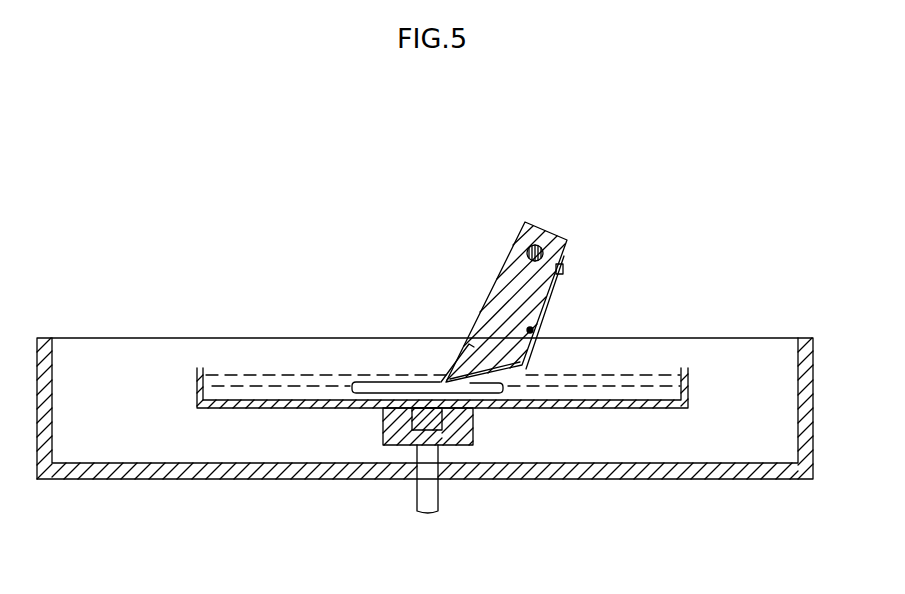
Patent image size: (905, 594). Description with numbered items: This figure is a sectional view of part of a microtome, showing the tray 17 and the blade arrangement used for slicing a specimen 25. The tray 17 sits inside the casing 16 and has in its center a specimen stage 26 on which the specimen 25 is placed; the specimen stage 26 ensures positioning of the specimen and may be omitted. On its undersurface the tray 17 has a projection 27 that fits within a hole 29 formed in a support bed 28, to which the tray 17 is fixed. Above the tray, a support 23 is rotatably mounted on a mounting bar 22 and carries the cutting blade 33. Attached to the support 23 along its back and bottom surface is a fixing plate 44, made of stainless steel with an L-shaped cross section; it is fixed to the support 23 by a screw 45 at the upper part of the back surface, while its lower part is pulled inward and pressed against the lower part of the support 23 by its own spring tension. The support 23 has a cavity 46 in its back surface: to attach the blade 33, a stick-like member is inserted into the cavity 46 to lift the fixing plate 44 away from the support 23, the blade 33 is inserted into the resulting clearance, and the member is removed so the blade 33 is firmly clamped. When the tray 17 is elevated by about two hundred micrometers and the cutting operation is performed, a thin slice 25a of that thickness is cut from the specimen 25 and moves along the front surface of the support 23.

The casing 16 is at (55, 372).
The tray 17 is at (238, 400).
The mounting bar 22 is at (528, 247).
The support 23 is at (503, 282).
The specimen 25 is at (370, 382).
The thin slice 25a is at (467, 349).
The specimen stage 26 is at (494, 401).
The projection 27 is at (385, 445).
The support bed 28 is at (444, 448).
The hole 29 is at (410, 422).
The cutting blade 33 is at (504, 391).
The fixing plate 44 is at (551, 288).
The screw 45 is at (565, 269).
The cavity 46 is at (534, 330).